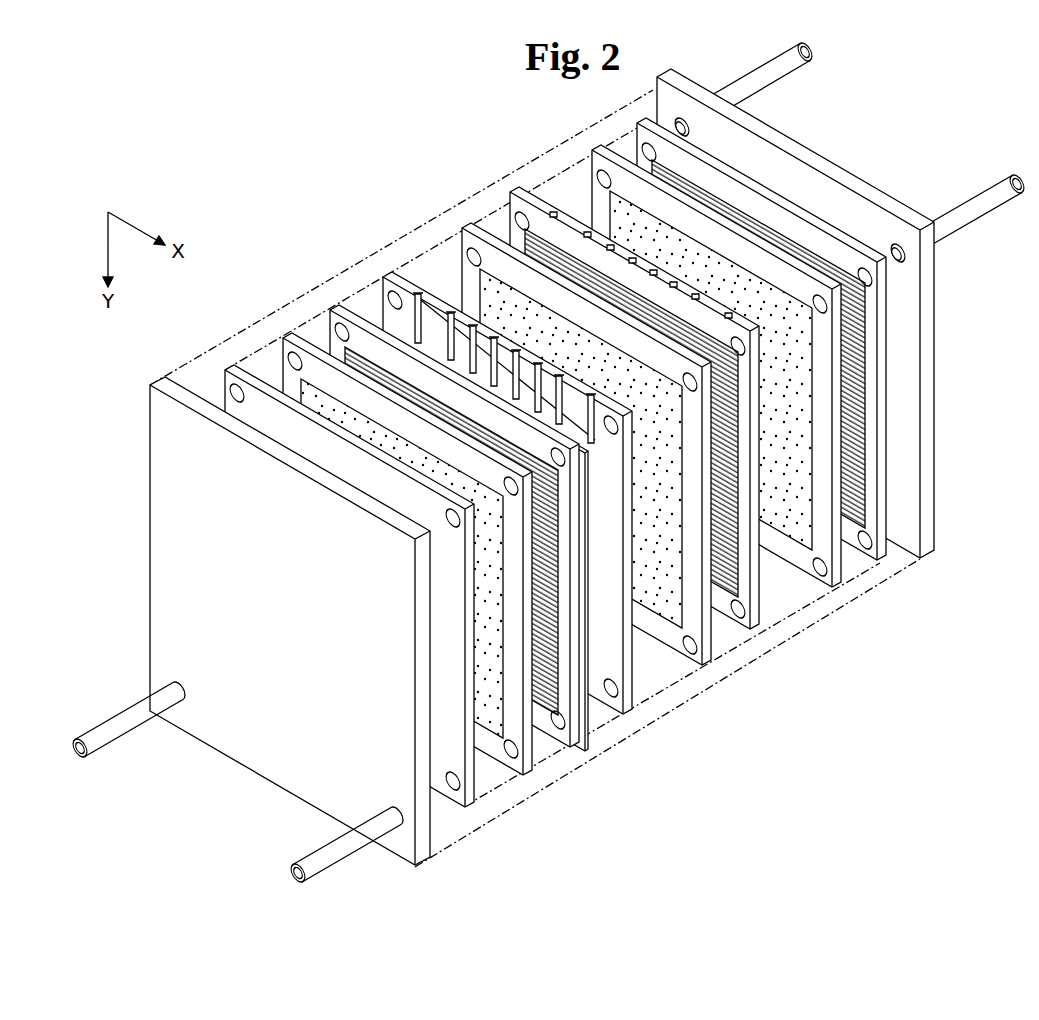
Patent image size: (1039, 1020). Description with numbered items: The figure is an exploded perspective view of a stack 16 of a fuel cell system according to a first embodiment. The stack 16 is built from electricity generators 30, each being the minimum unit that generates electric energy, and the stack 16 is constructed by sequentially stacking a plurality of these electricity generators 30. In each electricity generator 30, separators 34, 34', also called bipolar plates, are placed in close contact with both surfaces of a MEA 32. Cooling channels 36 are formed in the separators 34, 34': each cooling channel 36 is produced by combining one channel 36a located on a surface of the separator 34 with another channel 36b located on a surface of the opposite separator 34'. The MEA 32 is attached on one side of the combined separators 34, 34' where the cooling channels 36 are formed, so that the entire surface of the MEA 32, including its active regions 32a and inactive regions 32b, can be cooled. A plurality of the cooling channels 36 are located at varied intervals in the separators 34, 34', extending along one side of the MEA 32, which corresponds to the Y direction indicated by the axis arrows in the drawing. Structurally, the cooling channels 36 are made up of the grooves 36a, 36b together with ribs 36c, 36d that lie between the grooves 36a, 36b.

The stack 16 is at (548, 462).
The electricity generator 30 is at (507, 477).
The MEA 32 is at (843, 577).
The active region 32a is at (268, 390).
The inactive region 32b is at (312, 356).
The separator 34 is at (616, 472).
The separator 34' is at (634, 452).
The cooling channel 36 is at (455, 430).
The channel 36a is at (417, 293).
The channel 36b is at (392, 345).
The rib 36c is at (440, 303).
The rib 36d is at (374, 324).